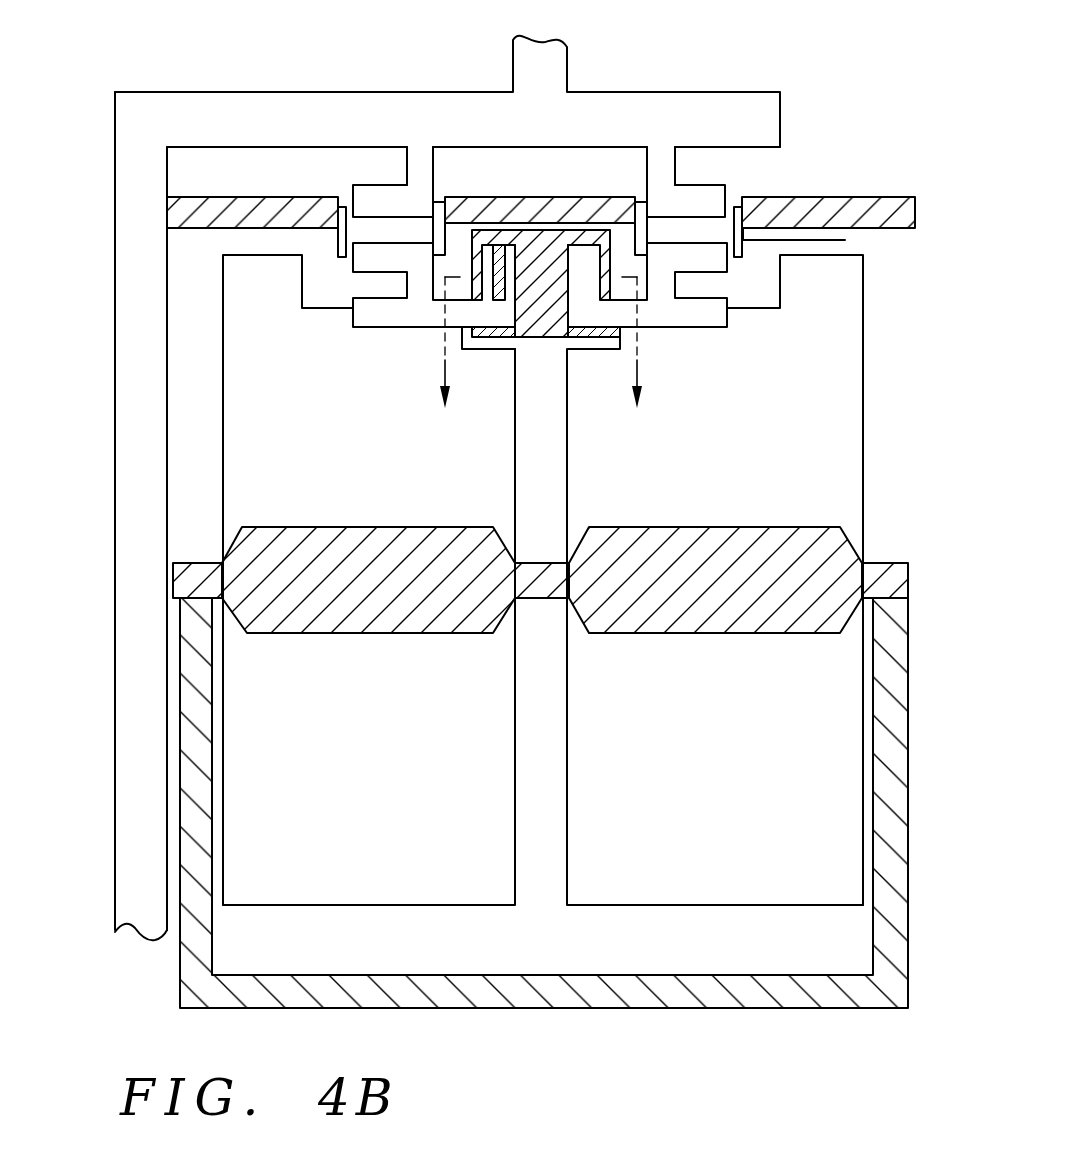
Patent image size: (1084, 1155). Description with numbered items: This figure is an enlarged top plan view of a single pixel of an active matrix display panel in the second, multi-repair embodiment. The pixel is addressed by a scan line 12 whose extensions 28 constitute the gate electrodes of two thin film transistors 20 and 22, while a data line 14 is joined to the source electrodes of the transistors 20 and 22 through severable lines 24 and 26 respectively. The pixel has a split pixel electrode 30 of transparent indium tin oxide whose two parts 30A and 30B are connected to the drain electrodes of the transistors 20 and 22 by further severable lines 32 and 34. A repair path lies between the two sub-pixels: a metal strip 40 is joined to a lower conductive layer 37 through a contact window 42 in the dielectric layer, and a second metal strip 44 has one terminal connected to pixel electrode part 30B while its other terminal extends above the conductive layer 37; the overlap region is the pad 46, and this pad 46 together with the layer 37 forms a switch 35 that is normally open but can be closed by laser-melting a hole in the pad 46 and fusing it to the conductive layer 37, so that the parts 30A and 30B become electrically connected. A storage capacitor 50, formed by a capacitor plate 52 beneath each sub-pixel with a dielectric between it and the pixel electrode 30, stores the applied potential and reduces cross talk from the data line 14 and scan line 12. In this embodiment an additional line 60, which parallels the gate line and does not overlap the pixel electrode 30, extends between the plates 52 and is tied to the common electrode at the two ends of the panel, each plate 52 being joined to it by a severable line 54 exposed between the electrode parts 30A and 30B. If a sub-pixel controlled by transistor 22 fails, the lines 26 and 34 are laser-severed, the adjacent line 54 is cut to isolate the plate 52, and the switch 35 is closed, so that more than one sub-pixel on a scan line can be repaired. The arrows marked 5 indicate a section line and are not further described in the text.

The section line 5- 5 is at (542, 358).
The scan line 12 is at (852, 203).
The data line 14 is at (568, 50).
The transistor 20 is at (363, 228).
The transistor 22 is at (722, 228).
The severable line 24 is at (405, 163).
The severable line 26 is at (643, 162).
The extension 28 is at (845, 240).
The split pixel electrode 30 is at (598, 893).
The pixel electrode part 30A is at (268, 797).
The pixel electrode part 30B is at (755, 797).
The severable line 32 is at (418, 180).
The severable line 34 is at (663, 285).
The switch 35 is at (600, 331).
The conductive layer 37 is at (542, 323).
The metal strip 40 is at (370, 310).
The contact window 42 is at (498, 268).
The second metal strip 44 is at (633, 313).
The pad 46 is at (583, 260).
The storage capacitor 50 is at (805, 540).
The capacitor plate 52 is at (248, 542).
The severable line 54 is at (880, 563).
The additional line 60 is at (758, 998).